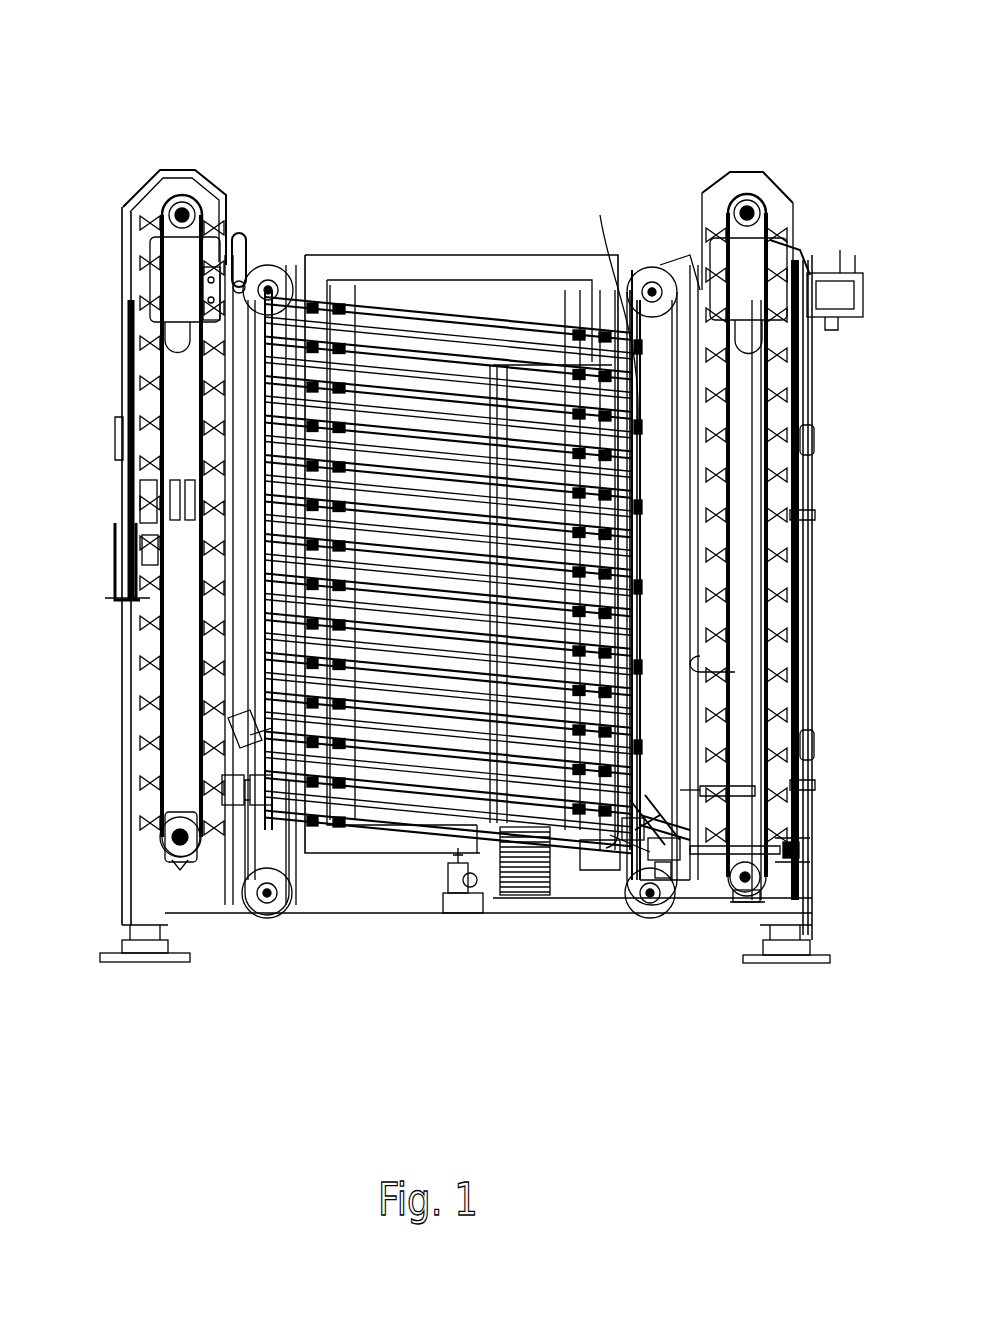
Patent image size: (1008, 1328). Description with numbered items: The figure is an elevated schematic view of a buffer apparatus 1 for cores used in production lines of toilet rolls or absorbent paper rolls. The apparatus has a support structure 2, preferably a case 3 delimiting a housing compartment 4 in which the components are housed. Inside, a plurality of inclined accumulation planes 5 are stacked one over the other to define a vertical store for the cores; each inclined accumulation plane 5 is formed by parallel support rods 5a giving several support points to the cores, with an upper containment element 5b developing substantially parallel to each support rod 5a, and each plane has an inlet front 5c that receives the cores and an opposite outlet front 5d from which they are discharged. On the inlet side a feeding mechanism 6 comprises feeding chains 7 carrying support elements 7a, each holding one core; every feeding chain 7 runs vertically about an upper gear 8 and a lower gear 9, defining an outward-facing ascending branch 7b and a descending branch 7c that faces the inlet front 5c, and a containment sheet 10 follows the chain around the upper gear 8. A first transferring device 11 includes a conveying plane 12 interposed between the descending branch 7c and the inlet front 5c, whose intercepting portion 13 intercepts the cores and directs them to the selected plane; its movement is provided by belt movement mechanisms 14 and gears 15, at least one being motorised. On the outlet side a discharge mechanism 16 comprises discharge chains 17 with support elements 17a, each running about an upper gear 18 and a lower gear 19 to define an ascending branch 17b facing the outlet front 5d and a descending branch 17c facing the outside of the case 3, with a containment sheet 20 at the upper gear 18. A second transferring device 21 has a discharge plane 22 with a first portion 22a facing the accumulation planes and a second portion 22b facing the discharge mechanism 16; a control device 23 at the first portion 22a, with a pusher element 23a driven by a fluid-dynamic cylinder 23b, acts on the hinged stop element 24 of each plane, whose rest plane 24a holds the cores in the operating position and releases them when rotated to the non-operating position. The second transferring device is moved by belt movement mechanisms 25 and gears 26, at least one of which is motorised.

The buffer apparatus 1 is at (636, 140).
The support structure 2 is at (110, 965).
The case 3 is at (496, 263).
The housing compartment 4 is at (460, 256).
The inclined accumulation plane 5 is at (403, 306).
The support rod 5a is at (425, 312).
The upper containment element 5b is at (453, 298).
The inlet front 5c is at (260, 637).
The outlet front 5d is at (640, 633).
The feeding mechanism 6 is at (241, 250).
The feeding chain 7 is at (155, 605).
The support element 7a is at (188, 170).
The ascending branch 7b is at (152, 650).
The descending branch 7c is at (205, 440).
The upper gear 8 is at (160, 215).
The lower gear 9 is at (184, 850).
The containment sheet 10 is at (185, 185).
The first transferring device 11 is at (288, 790).
The conveying plane 12 is at (258, 765).
The intercepting portion 13 is at (247, 748).
The belt movement mechanism 14 is at (276, 280).
The gear 15 is at (282, 288).
The discharge mechanism 16 is at (808, 233).
The discharge chain 17 is at (790, 490).
The support element 17a is at (745, 190).
The ascending branch 17b is at (735, 660).
The descending branch 17c is at (822, 790).
The upper gear 18 is at (792, 194).
The lower gear 19 is at (722, 880).
The containment sheet 20 is at (785, 172).
The second transferring device 21 is at (660, 872).
The discharge plane 22 is at (795, 855).
The first portion 22a is at (660, 850).
The second portion 22b is at (781, 850).
The control device 23 is at (642, 840).
The pusher element 23a is at (640, 838).
The fluid-dynamic cylinder 23b is at (752, 790).
The stop element 24 is at (644, 513).
The rest plane 24a is at (505, 1035).
The belt movement mechanism 25 is at (670, 268).
The gear 26 is at (655, 268).